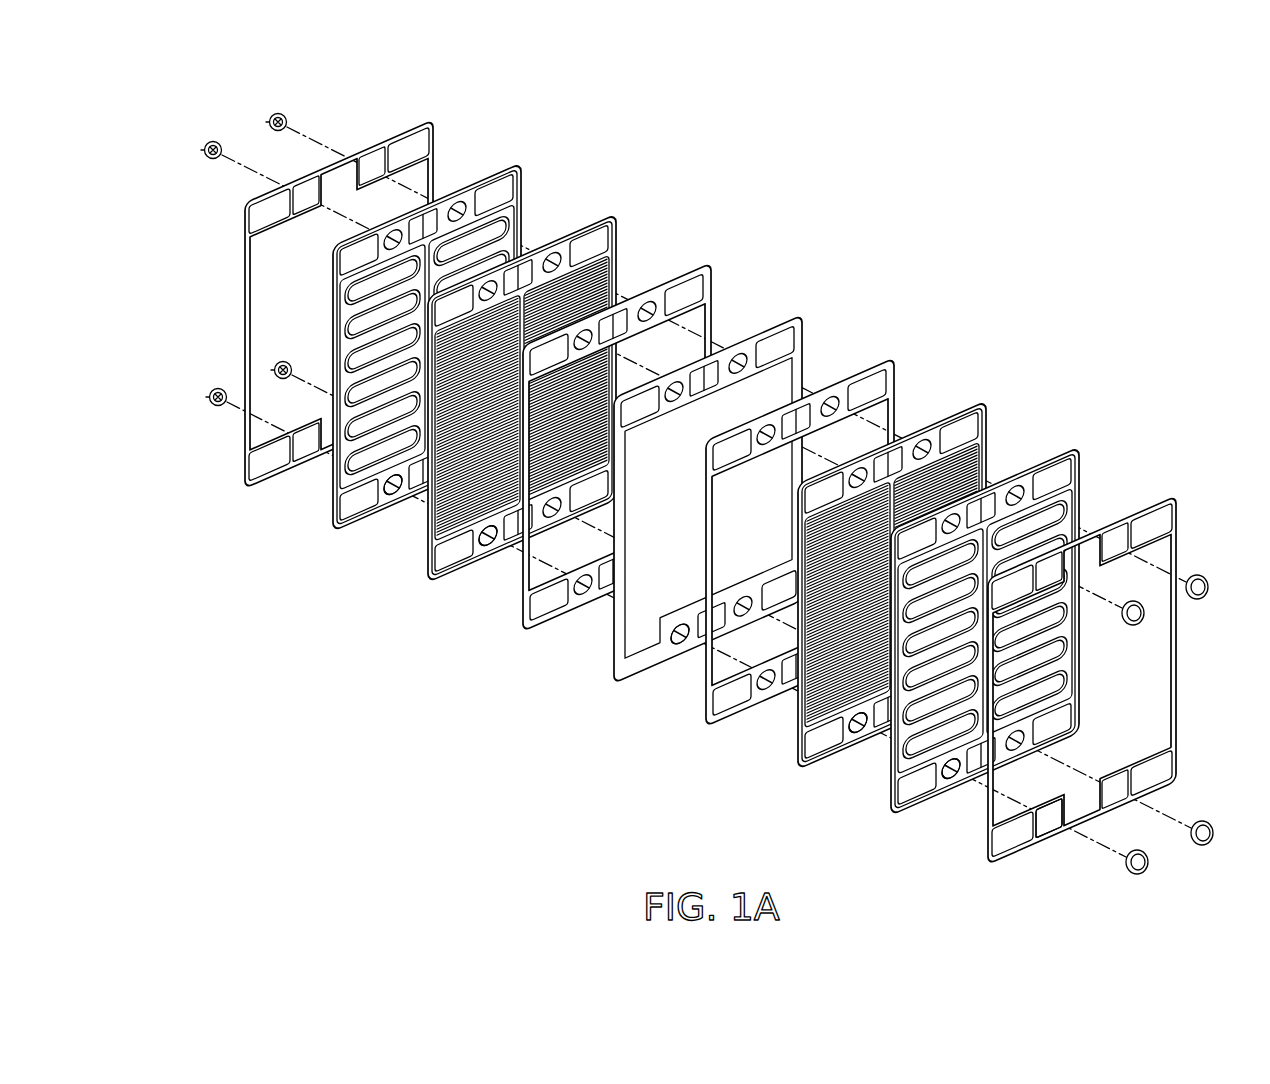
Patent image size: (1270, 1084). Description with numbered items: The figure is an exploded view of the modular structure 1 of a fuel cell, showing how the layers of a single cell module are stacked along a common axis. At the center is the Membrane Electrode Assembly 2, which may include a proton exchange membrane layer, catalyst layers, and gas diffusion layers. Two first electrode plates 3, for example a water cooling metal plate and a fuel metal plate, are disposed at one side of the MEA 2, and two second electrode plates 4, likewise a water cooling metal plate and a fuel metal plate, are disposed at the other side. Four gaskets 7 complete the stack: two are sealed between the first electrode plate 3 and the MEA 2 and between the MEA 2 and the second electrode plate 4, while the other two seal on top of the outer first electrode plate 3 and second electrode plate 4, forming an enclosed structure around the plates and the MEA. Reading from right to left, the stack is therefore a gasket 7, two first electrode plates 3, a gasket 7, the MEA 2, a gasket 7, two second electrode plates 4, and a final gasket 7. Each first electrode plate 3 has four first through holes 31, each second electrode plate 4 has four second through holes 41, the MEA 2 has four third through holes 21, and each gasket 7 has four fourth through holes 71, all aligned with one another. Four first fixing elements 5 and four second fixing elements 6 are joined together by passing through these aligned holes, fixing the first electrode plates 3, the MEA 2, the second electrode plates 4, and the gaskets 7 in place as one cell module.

The modular structure 1 is at (965, 212).
The Membrane Electrode Assembly 2 is at (803, 326).
The first electrode plate 3 is at (989, 417).
The second electrode plate 4 is at (527, 182).
The first fixing element 5 is at (1148, 862).
The second fixing element 6 is at (205, 397).
The gasket 7 is at (433, 137).
The third through hole 21 is at (680, 632).
The first through hole 31 is at (863, 724).
The second through hole 41 is at (400, 492).
The fourth through hole 71 is at (302, 462).